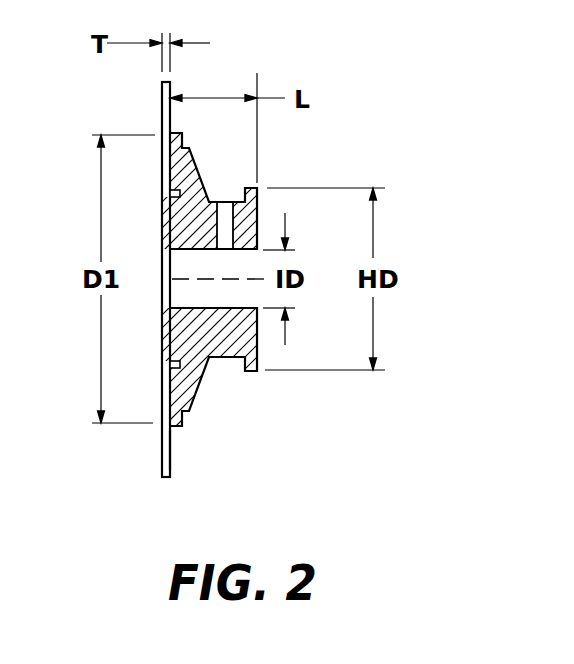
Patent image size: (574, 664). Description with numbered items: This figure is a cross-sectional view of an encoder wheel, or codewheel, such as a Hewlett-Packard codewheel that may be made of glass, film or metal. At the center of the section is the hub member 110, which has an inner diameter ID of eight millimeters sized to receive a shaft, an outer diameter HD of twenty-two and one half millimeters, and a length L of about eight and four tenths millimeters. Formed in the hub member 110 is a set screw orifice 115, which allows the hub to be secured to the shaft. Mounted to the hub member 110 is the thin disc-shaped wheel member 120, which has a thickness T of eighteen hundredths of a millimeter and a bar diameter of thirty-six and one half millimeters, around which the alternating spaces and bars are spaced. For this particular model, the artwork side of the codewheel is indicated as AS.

The hub member 110 is at (197, 390).
The set screw orifice 115 is at (198, 171).
The disc-shaped wheel member 120 is at (162, 442).
The artwork side AS is at (181, 454).